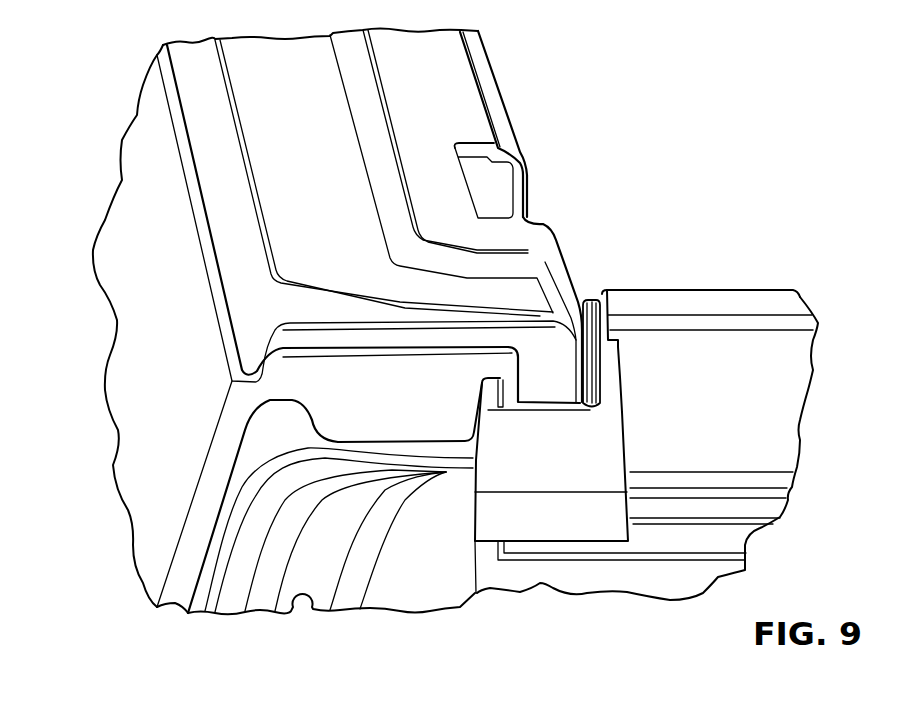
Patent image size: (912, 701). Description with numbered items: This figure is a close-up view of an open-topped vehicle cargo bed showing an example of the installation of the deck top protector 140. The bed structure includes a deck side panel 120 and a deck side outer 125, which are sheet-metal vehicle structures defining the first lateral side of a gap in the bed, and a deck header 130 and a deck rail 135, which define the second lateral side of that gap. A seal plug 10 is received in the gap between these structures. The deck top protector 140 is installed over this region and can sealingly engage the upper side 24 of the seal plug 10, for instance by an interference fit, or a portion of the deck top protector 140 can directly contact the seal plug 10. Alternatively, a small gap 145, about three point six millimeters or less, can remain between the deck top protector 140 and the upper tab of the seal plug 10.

The seal plug 10 is at (538, 519).
The upper side 24 is at (600, 408).
The deck side panel 120 is at (320, 570).
The deck side outer 125 is at (128, 165).
The deck header 130 is at (580, 580).
The deck rail 135 is at (708, 303).
The deck top protector 140 is at (198, 110).
The gap 145 is at (576, 303).